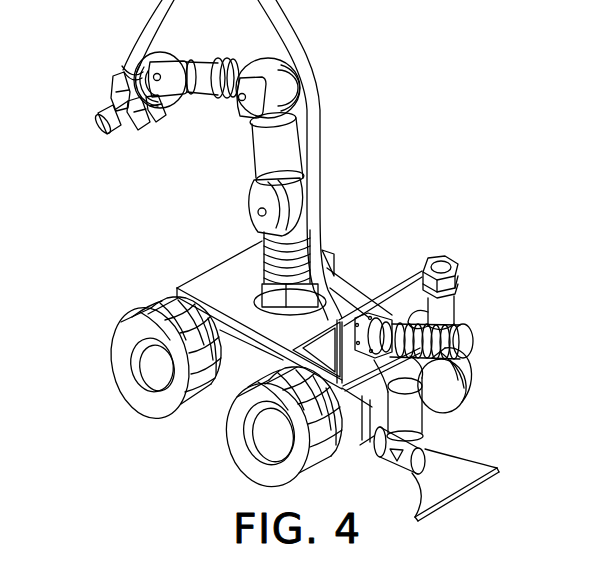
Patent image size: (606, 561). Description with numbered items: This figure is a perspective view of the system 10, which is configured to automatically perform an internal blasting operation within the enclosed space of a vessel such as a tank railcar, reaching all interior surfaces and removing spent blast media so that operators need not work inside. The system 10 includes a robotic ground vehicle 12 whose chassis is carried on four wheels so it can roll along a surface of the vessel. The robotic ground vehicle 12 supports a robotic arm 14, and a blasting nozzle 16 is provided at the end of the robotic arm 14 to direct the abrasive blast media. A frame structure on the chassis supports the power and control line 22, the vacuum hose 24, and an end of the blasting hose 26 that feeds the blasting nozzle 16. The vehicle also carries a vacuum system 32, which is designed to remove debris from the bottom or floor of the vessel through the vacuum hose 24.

The system 10 is at (440, 127).
The robotic ground vehicle 12 is at (217, 401).
The robotic arm 14 is at (210, 105).
The blasting nozzle 16 is at (109, 110).
The power and control line 22 is at (473, 350).
The vacuum hose 24 is at (450, 251).
The blasting hose 26 is at (308, 70).
The vacuum system 32 is at (490, 488).